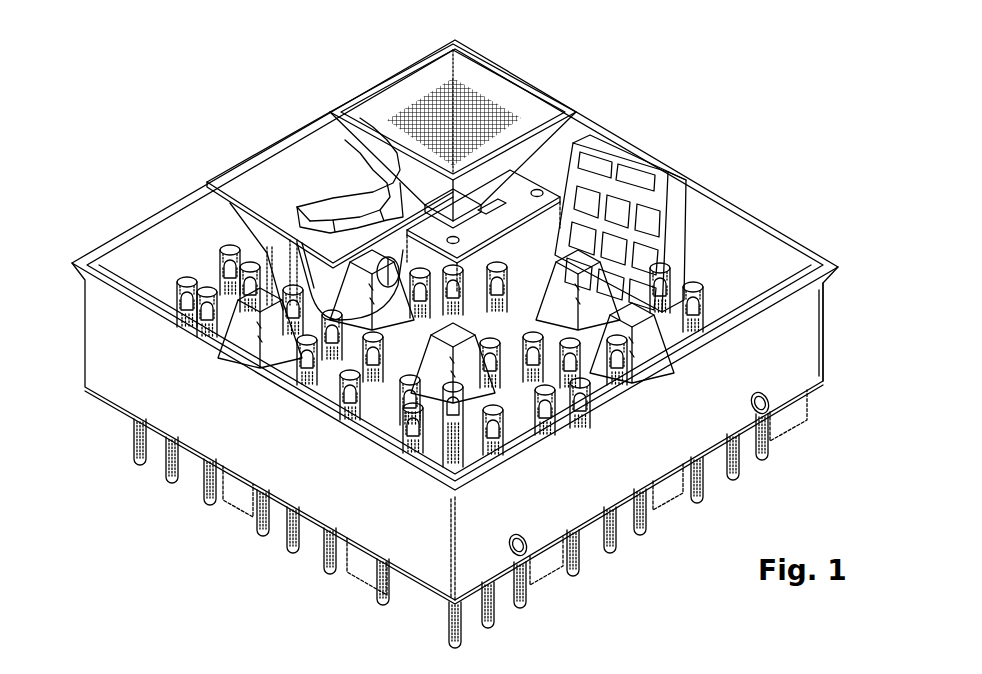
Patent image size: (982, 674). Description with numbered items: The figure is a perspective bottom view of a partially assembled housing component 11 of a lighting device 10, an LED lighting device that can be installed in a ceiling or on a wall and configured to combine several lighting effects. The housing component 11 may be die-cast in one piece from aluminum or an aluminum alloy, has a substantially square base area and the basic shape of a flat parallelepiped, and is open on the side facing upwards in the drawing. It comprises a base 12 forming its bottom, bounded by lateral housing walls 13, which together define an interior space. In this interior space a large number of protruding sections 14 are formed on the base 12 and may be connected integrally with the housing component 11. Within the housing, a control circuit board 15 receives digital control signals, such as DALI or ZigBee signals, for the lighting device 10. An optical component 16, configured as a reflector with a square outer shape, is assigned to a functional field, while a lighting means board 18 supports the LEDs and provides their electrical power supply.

The lighting device 10 is at (206, 95).
The housing component 11 is at (797, 213).
The base 12 is at (547, 573).
The lateral housing walls 13 is at (818, 345).
The protruding section 14 is at (437, 378).
The control circuit board 15 is at (613, 315).
The optical component 16 is at (486, 70).
The lighting means board 18 is at (512, 195).